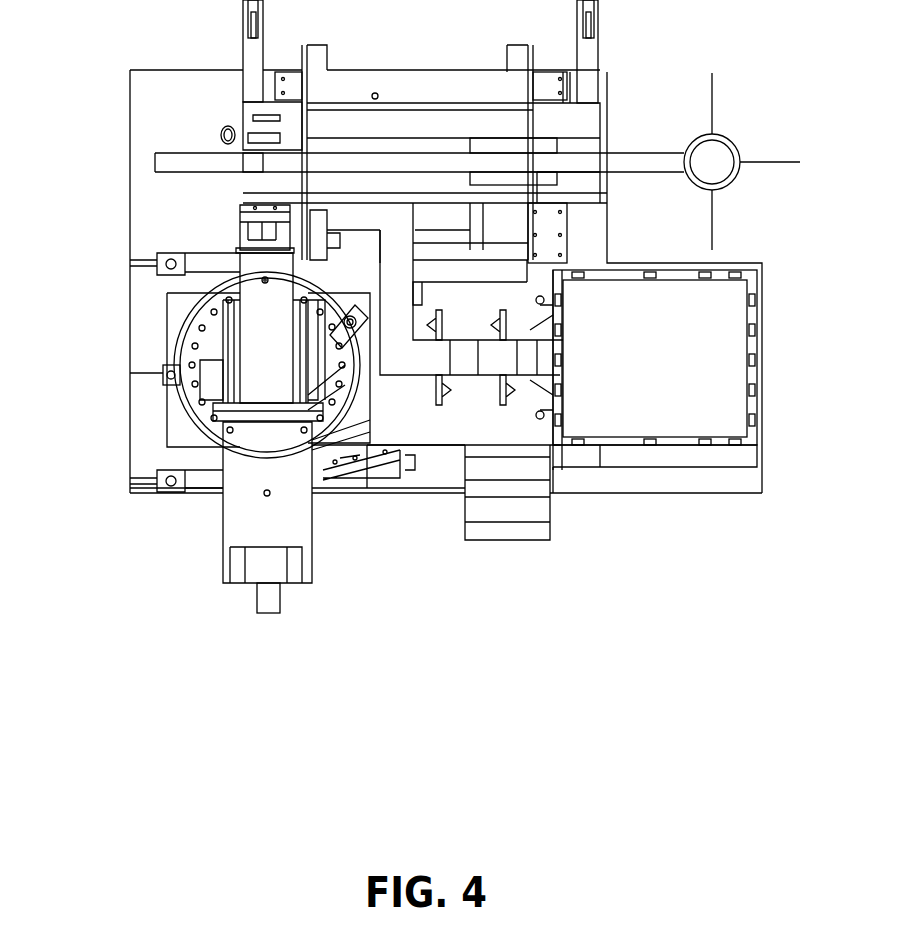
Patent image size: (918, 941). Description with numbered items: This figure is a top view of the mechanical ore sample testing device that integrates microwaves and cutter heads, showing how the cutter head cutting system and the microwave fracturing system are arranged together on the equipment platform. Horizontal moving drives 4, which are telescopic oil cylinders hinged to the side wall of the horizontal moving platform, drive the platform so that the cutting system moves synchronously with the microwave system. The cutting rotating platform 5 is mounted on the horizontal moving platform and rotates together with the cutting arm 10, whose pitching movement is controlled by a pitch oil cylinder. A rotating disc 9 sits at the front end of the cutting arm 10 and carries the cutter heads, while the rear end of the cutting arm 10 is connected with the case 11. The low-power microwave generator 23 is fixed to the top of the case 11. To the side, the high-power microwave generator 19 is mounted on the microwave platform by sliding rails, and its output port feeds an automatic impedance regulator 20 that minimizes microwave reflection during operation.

The horizontal moving drive 4 is at (334, 479).
The cutting rotating platform 5 is at (160, 366).
The rotating disc 9 is at (248, 233).
The cutting arm 10 is at (255, 297).
The case 11 is at (242, 500).
The high-power microwave generator 19 is at (690, 387).
The automatic impedance regulator 20 is at (458, 363).
The low-power microwave generator 23 is at (263, 563).